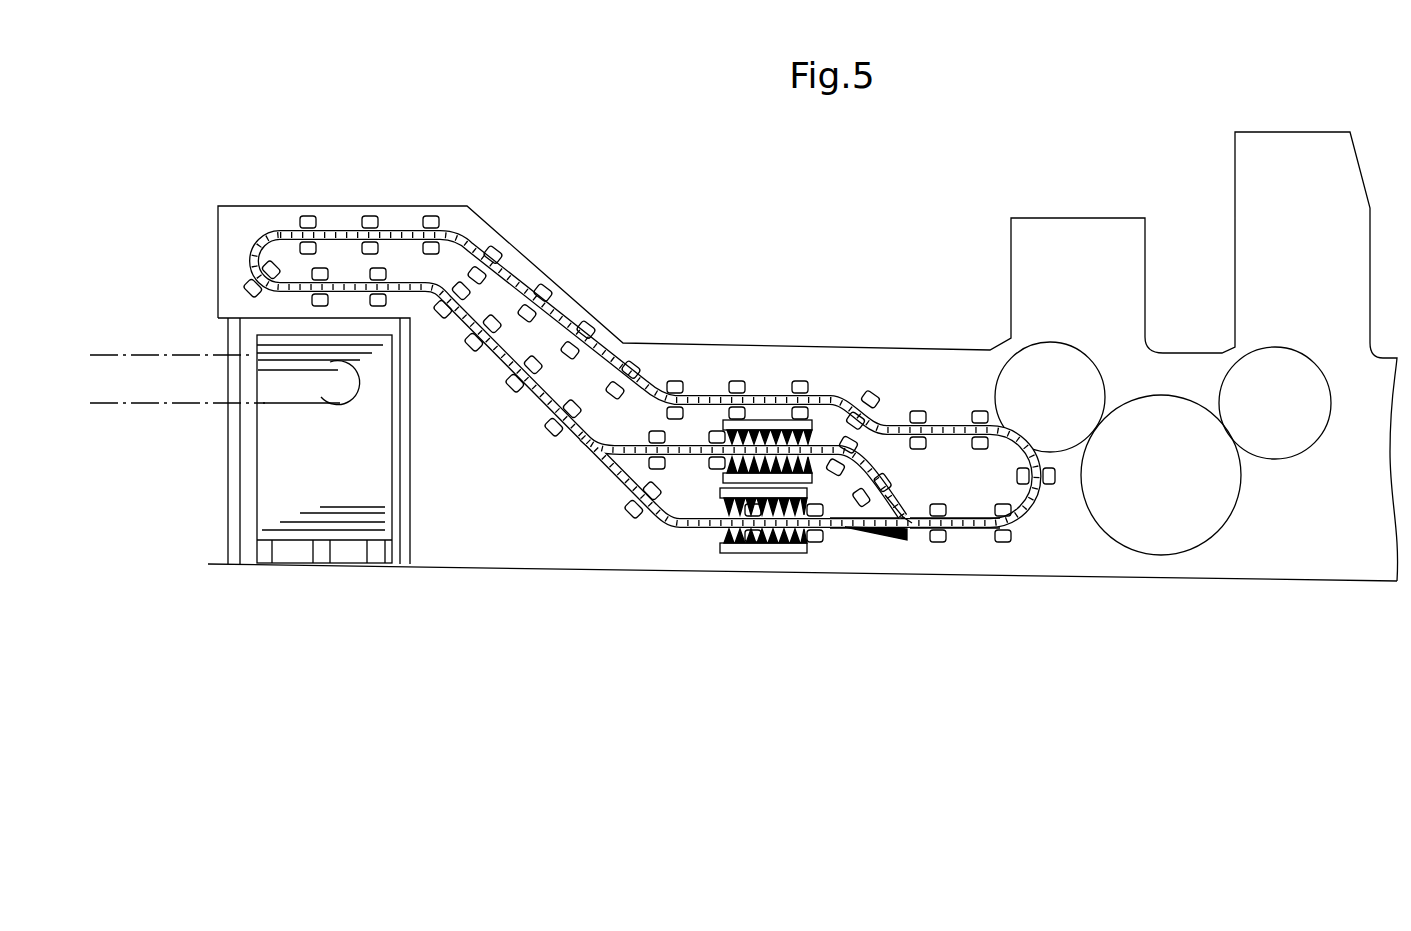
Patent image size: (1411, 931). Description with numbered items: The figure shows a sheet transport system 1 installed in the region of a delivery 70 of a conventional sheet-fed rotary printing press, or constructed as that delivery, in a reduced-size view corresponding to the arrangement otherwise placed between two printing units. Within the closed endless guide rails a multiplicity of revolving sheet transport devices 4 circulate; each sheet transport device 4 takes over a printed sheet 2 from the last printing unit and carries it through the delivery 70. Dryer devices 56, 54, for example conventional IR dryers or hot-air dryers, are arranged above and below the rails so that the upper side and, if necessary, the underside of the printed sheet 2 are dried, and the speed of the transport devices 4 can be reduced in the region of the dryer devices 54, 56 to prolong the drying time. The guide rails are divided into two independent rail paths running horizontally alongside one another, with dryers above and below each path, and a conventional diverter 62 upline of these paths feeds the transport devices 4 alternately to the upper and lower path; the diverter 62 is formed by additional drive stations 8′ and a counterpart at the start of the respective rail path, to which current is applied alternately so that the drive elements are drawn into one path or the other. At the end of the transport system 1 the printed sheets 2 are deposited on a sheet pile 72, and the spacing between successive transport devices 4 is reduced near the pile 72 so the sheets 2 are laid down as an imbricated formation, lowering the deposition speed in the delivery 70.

The sheet transport system 1 is at (405, 230).
The delivery 70 is at (575, 249).
The sheet pile 72 is at (300, 474).
The dryer device 56 is at (762, 423).
The dryer device 54 is at (770, 548).
The sheet 2 is at (861, 540).
The diverter 62 is at (906, 531).
The additional drive station 8′ is at (905, 520).
The sheet transport device 4 is at (966, 528).